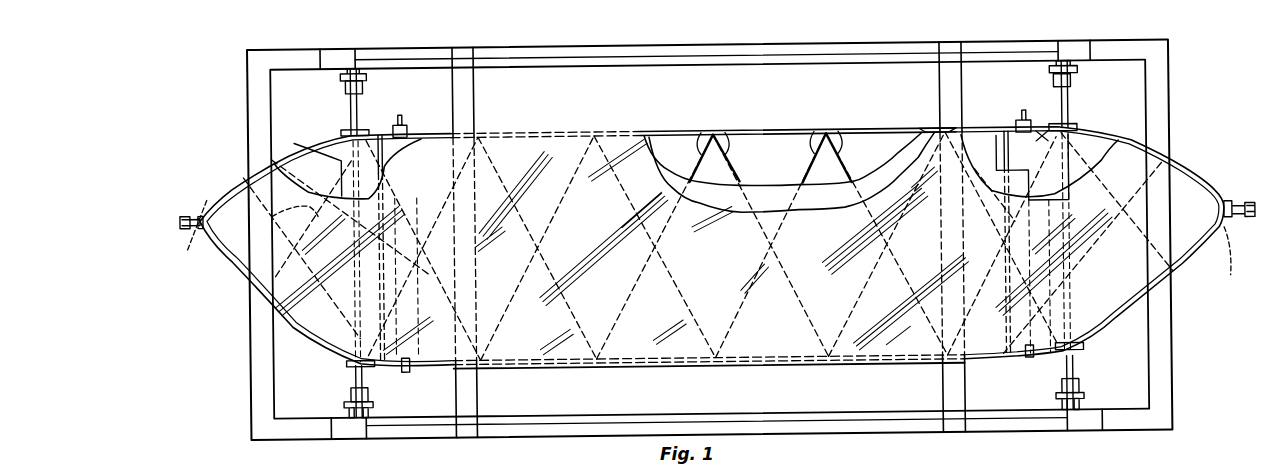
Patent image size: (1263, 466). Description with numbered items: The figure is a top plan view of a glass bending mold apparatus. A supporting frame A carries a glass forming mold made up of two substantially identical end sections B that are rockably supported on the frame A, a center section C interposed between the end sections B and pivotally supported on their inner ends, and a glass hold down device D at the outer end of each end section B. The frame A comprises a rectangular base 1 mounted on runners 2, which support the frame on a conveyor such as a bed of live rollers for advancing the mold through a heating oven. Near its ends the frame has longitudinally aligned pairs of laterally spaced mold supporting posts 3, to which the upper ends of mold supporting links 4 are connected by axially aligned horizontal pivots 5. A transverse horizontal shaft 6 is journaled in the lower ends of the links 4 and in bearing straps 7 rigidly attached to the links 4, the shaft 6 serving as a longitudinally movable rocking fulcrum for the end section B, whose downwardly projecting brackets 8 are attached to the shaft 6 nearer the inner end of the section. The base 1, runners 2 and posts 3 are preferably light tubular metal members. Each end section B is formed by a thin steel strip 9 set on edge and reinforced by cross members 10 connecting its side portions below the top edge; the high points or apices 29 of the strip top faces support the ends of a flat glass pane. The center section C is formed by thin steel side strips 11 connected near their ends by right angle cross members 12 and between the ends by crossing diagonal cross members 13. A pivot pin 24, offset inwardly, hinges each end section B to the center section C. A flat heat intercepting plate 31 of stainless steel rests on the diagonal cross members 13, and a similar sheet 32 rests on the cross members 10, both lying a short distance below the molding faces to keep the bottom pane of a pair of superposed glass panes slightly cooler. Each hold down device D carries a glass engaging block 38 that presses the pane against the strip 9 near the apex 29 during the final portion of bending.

The rectangular base 1 is at (508, 432).
The runners 2 is at (1004, 386).
The mold supporting posts 3 is at (1075, 444).
The mold supporting links 4 is at (1075, 390).
The horizontal pivots 5 is at (1080, 405).
The transverse shaft 6 is at (1085, 100).
The bearing straps 7 is at (1055, 382).
The brackets 8 is at (1078, 352).
The steel strips 9 is at (1188, 165).
The cross members 10 is at (1137, 215).
The side strips 11 is at (812, 388).
The cross members 12 is at (970, 190).
The diagonal cross members 13 is at (500, 307).
The pivot pin 24 is at (999, 388).
The apices 29 is at (701, 238).
The intercepting plate 31 is at (770, 190).
The sheet 32 is at (1124, 140).
The glass engaging block 38 is at (1193, 210).
The supporting frame A is at (610, 42).
The end sections B is at (1182, 155).
The center section C is at (580, 122).
The glass hold down device D is at (177, 214).